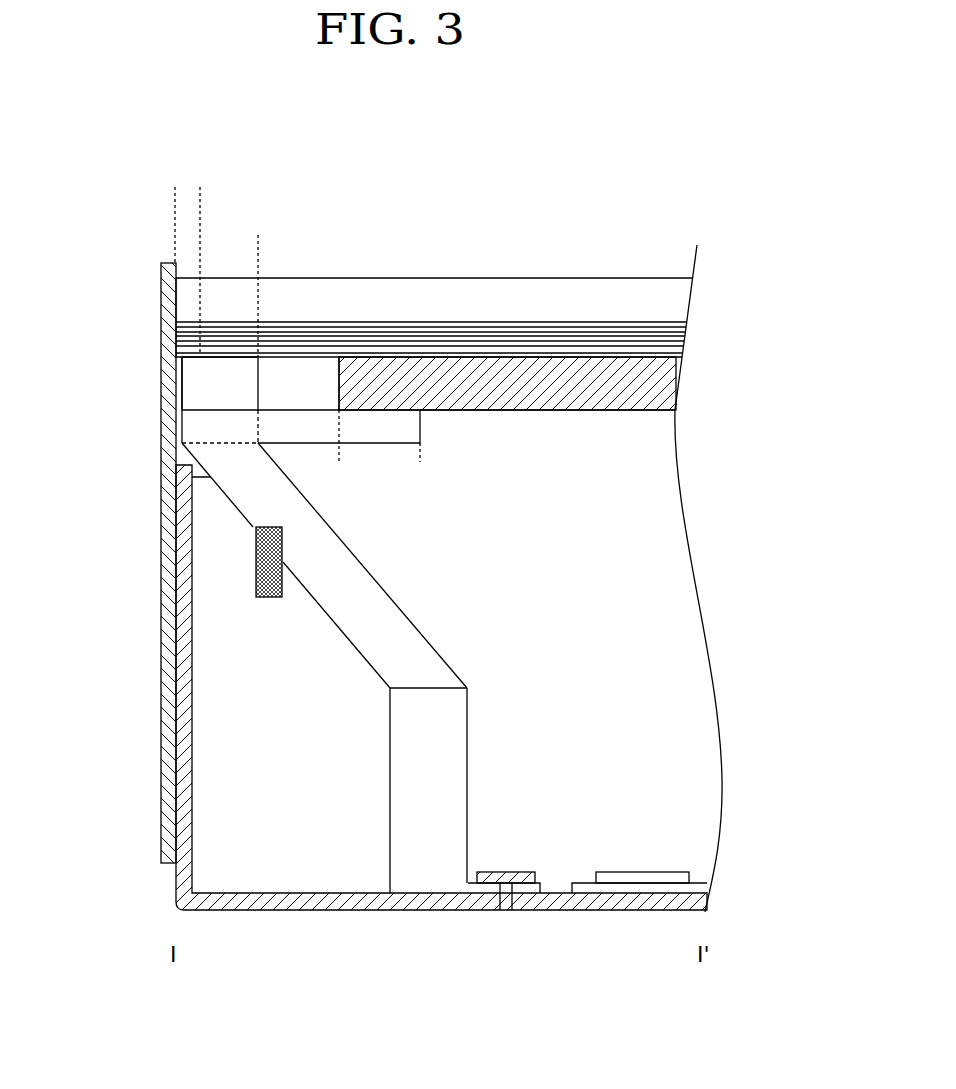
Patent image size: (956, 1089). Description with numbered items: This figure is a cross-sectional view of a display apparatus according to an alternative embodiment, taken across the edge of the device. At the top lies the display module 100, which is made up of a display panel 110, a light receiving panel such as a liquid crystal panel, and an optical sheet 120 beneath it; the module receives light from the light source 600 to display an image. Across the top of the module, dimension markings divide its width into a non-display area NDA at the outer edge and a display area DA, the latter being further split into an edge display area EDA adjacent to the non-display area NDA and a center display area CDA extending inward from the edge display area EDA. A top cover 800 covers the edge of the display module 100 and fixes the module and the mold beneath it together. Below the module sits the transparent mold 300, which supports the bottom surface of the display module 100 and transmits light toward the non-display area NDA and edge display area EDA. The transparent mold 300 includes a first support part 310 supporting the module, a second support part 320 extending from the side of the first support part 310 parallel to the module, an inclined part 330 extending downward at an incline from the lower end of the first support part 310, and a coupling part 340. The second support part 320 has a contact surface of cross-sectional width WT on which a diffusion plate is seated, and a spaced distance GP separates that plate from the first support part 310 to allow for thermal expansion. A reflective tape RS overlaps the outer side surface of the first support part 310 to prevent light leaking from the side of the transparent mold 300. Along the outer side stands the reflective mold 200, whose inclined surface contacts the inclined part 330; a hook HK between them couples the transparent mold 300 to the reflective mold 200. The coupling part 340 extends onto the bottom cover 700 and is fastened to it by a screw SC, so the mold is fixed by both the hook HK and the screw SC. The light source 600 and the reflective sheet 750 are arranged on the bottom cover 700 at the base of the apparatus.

The display module 100 is at (511, 319).
The display panel 110 is at (693, 300).
The optical sheet 120 is at (690, 345).
The top cover 800 is at (172, 371).
The transparent mold 300 is at (663, 388).
The first support part 310 is at (198, 425).
The second support part 320 is at (270, 431).
The inclined part 330 is at (240, 487).
The coupling part 340 is at (405, 742).
The reflective mold 200 is at (200, 800).
The bottom cover 700 is at (185, 887).
The reflective sheet 750 is at (612, 893).
The light source 600 is at (642, 872).
The screw SC is at (505, 872).
The hook HK is at (272, 527).
The reflective tape RS is at (162, 393).
The spaced distance GP is at (339, 393).
The cross-sectional width WT is at (420, 458).
The display area DA is at (697, 187).
The non-display area NDA is at (200, 187).
The edge display area EDA is at (258, 235).
The center display area CDA is at (697, 235).